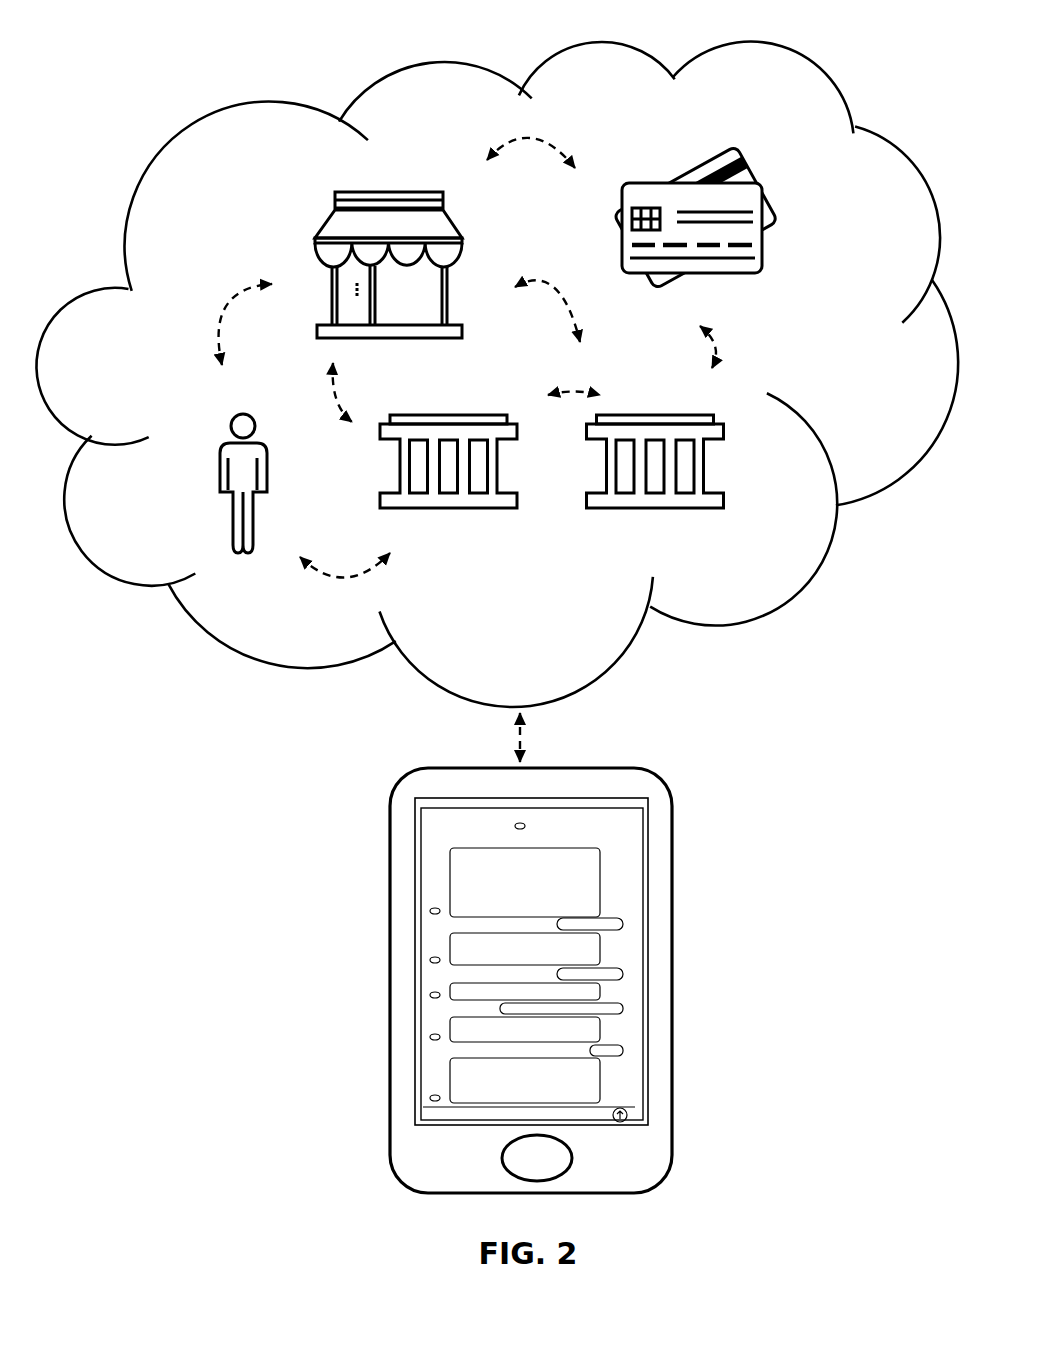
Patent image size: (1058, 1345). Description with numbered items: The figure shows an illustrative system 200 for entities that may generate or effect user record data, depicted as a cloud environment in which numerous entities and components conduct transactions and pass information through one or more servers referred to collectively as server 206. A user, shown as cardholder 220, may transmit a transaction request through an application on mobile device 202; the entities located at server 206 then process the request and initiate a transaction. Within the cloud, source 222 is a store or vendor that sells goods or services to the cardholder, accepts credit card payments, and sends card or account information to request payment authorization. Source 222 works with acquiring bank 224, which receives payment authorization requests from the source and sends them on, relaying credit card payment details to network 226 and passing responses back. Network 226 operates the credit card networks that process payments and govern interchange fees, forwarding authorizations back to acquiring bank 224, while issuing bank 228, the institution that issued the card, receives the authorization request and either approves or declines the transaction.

The system 200 is at (487, 40).
The mobile device 202 is at (424, 845).
The server 206 is at (827, 118).
The cardholder 220 is at (198, 455).
The source 222 is at (288, 224).
The acquiring bank 224 is at (467, 537).
The network 226 is at (783, 272).
The issuing bank 228 is at (663, 522).